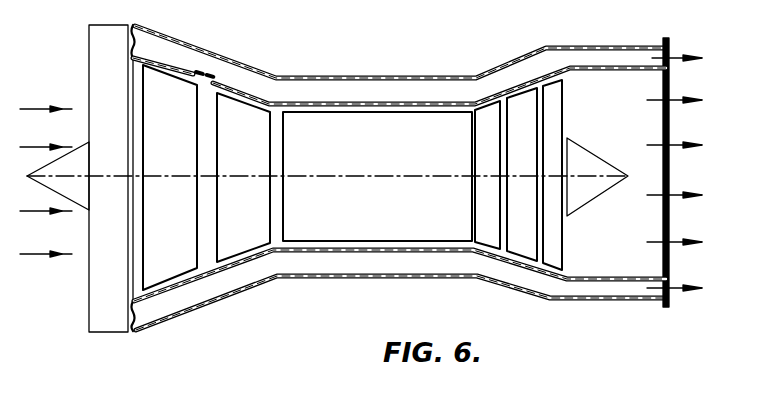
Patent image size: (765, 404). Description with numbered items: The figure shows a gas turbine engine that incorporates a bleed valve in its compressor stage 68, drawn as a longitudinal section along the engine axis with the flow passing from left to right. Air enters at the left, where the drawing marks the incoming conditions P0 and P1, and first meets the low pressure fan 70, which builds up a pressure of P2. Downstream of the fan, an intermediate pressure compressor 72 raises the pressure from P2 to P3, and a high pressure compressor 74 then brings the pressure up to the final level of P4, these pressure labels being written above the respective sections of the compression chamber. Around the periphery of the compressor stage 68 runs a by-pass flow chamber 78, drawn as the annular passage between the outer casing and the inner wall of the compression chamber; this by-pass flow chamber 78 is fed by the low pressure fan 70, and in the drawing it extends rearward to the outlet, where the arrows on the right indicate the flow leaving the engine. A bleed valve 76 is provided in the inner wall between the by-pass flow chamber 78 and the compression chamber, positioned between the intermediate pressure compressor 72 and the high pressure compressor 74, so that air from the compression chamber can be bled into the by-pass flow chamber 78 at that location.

The compressor stage 68 is at (233, 303).
The low pressure fan 70 is at (112, 332).
The intermediate pressure compressor 72 is at (163, 268).
The high pressure compressor 74 is at (242, 240).
The bleed valve 76 is at (192, 72).
The by-pass flow chamber 78 is at (378, 90).
The pressure P0 is at (33, 91).
The pressure P1 is at (76, 91).
The pressure P2 is at (135, 118).
The pressure P3 is at (212, 128).
The pressure P4 is at (283, 123).